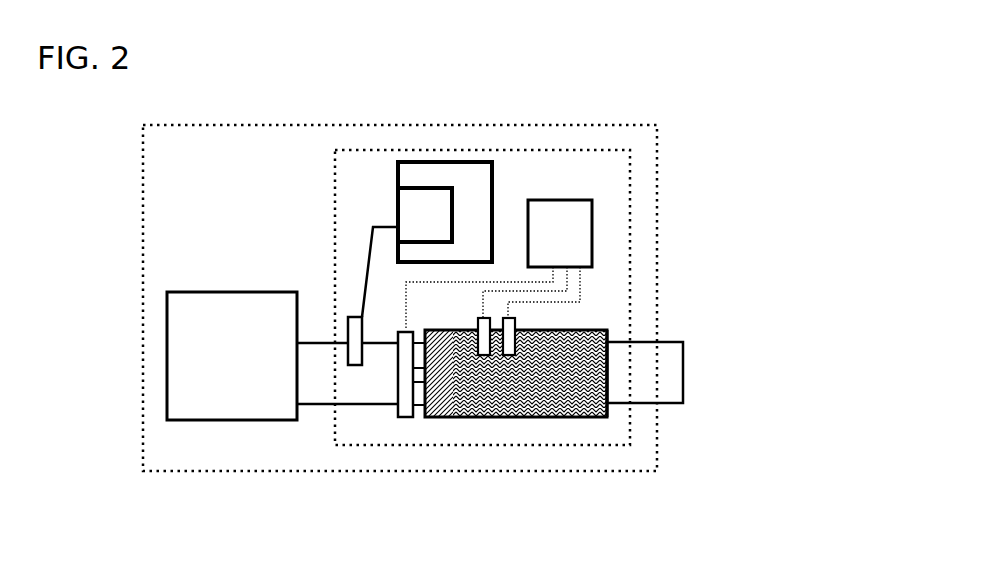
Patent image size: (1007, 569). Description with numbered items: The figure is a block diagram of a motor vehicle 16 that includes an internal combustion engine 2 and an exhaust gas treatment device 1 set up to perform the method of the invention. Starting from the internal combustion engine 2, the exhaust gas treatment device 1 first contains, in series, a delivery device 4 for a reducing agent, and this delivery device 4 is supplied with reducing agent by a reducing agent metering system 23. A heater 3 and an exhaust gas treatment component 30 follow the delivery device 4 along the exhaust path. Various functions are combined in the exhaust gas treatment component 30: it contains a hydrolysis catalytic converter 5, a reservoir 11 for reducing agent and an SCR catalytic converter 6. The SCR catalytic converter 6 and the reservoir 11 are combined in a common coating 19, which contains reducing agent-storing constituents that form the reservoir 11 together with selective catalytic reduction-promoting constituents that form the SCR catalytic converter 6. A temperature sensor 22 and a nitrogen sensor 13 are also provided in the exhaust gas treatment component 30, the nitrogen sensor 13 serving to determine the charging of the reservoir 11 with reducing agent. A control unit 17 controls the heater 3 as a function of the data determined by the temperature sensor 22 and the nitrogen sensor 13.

The exhaust gas treatment device 1 is at (617, 148).
The internal combustion engine 2 is at (168, 420).
The heater 3 is at (403, 417).
The delivery device 4 is at (350, 317).
The hydrolysis catalytic converter 5 is at (447, 417).
The SCR catalytic converter 6 is at (530, 437).
The reservoir 11 is at (495, 407).
The nitrogen sensor 13 is at (515, 318).
The motor vehicle 16 is at (657, 125).
The control unit 17 is at (593, 227).
The coating 19 is at (605, 407).
The temperature sensor 22 is at (491, 317).
The reducing agent metering system 23 is at (397, 162).
The exhaust gas treatment component 30 is at (605, 382).